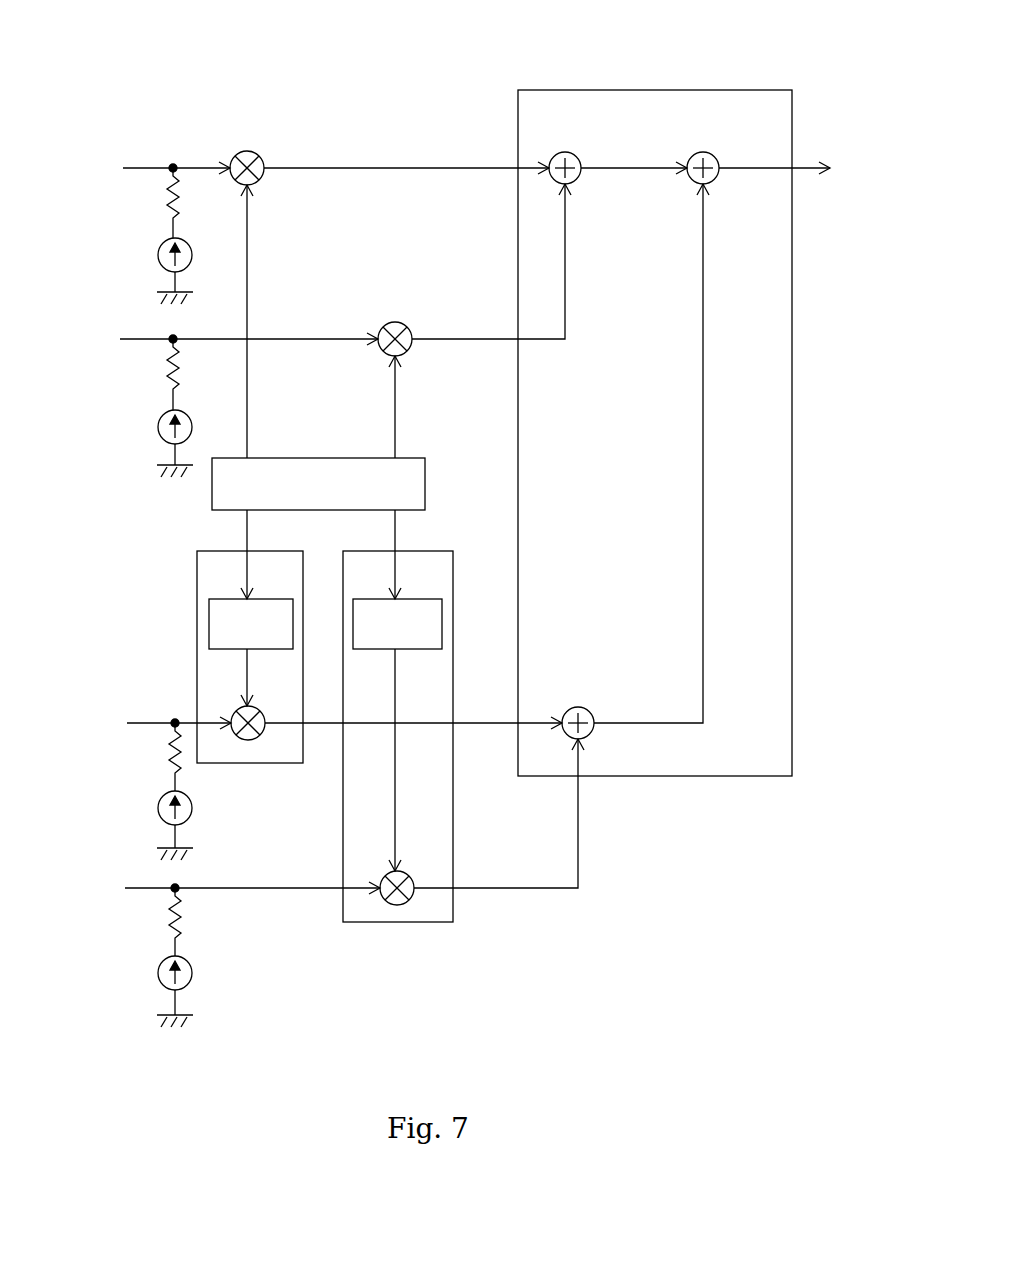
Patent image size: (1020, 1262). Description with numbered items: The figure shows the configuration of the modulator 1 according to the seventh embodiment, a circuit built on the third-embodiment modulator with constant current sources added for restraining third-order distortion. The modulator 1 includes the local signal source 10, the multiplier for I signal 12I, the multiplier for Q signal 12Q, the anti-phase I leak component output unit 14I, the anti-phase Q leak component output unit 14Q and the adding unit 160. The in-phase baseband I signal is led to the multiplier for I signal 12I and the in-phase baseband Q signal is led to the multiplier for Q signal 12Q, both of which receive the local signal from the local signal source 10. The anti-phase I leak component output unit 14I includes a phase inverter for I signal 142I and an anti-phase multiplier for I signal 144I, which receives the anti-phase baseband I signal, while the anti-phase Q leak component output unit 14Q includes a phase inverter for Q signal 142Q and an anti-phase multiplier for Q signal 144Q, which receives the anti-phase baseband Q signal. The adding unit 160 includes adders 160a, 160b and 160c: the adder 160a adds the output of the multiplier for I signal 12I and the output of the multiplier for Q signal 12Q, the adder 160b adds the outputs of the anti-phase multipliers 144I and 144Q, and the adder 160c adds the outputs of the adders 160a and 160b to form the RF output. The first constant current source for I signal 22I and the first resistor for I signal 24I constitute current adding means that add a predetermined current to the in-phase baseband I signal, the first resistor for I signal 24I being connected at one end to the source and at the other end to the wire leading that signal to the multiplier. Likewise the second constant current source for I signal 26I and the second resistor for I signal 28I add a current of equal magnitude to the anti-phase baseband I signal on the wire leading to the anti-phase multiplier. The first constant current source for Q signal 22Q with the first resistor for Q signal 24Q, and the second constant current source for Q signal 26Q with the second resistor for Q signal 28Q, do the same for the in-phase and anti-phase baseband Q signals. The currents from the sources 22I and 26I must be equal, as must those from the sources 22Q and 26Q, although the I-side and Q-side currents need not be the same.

The modulator 1 is at (817, 62).
The local signal source 10 is at (425, 482).
The multiplier for I signal 12I is at (257, 150).
The multiplier for Q signal 12Q is at (403, 322).
The anti-phase I leak component output unit 14I is at (208, 551).
The anti-phase Q leak component output unit 14Q is at (453, 823).
The phase inverter for I signal 142I is at (209, 618).
The phase inverter for Q signal 142Q is at (495, 600).
The anti-phase multiplier for I signal 144I is at (253, 740).
The anti-phase multiplier for Q signal 144Q is at (400, 905).
The first constant current source for I signal 22I is at (158, 256).
The first constant current source for Q signal 22Q is at (158, 429).
The first resistor for I signal 24I is at (167, 214).
The first resistor for Q signal 24Q is at (167, 385).
The second constant current source for I signal 26I is at (158, 808).
The second constant current source for Q signal 26Q is at (158, 979).
The second resistor for I signal 28I is at (169, 764).
The second resistor for Q signal 28Q is at (169, 934).
The adding unit 160 is at (793, 358).
The adder 160a is at (572, 152).
The adder 160b is at (590, 710).
The adder 160c is at (716, 152).